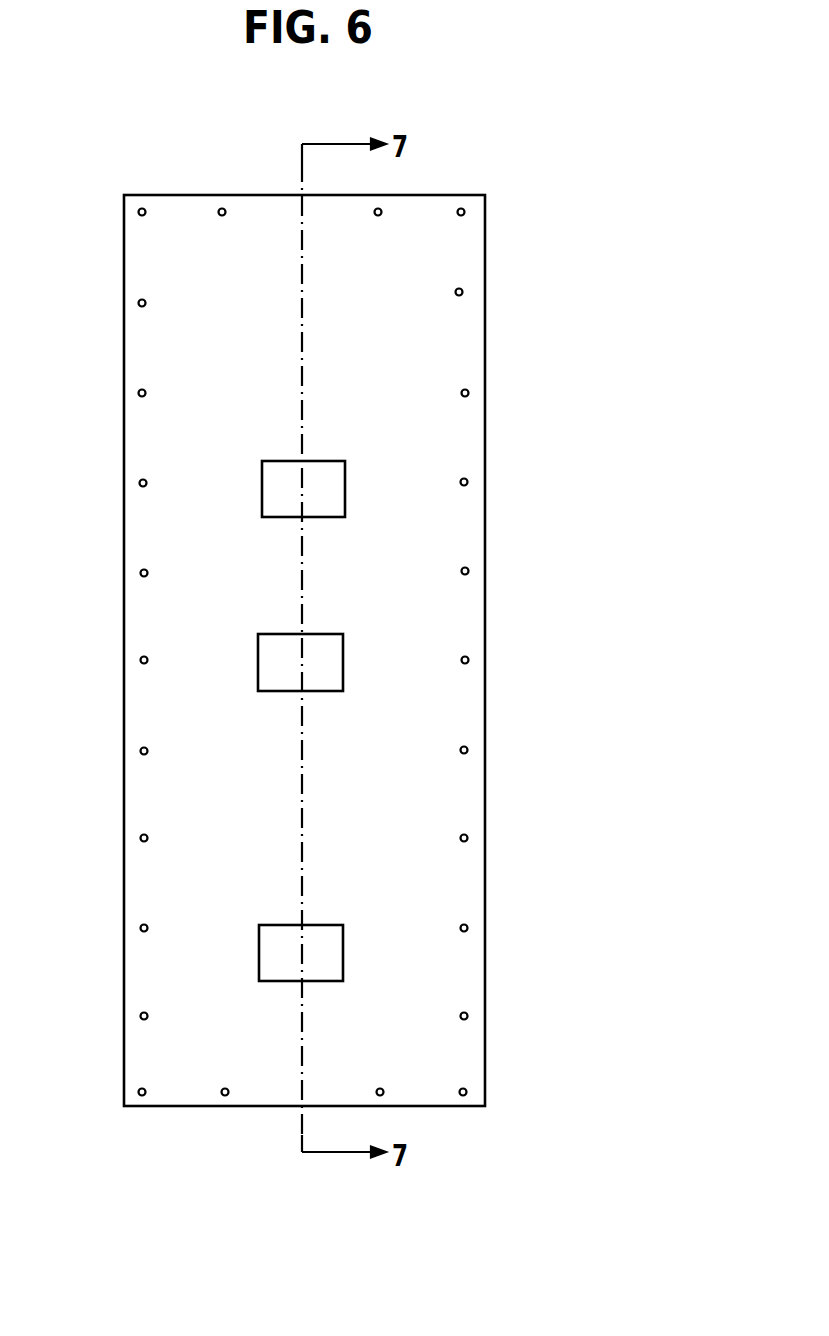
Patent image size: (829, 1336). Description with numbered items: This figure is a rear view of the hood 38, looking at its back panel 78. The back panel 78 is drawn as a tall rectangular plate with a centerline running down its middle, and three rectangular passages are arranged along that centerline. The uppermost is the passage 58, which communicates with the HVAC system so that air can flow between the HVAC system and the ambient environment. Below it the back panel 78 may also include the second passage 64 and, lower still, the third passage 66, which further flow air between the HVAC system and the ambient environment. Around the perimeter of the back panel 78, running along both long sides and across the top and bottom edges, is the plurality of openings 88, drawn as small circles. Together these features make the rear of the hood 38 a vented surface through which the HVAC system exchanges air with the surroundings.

The hood 38 is at (600, 194).
The back panel 78 is at (229, 323).
The plurality of openings 88 is at (135, 210).
The passage 58 is at (255, 484).
The second passage 64 is at (336, 652).
The third passage 66 is at (258, 956).